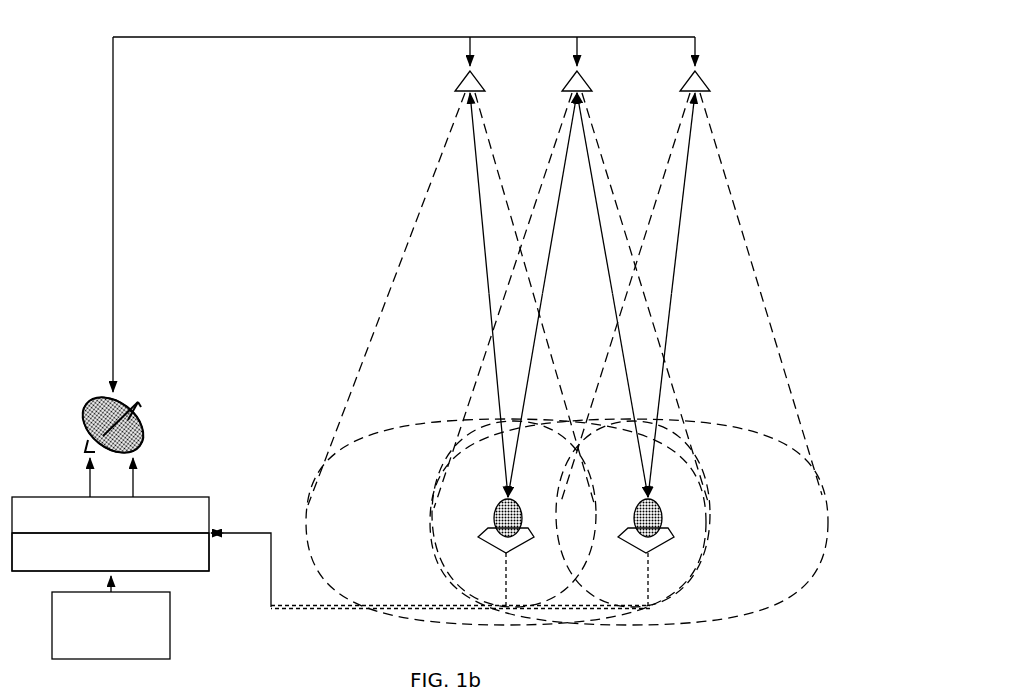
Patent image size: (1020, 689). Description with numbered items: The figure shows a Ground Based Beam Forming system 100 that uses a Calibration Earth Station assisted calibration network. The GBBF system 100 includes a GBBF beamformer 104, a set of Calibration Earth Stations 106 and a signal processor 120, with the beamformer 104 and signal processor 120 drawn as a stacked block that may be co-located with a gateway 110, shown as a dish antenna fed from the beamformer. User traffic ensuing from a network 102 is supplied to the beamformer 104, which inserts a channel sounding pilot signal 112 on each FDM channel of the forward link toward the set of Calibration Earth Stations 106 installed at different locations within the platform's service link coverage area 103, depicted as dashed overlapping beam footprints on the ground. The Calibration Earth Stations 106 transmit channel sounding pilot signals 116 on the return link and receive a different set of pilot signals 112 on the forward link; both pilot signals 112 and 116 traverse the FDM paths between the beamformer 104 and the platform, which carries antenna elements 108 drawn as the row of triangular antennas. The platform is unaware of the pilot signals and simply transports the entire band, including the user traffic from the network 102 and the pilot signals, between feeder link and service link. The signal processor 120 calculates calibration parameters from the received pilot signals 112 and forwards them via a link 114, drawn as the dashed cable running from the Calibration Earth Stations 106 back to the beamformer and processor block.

The GBBF system 100 is at (826, 244).
The network 102 is at (111, 617).
The service link coverage area 103 is at (760, 613).
The GBBF beamformer 104 is at (110, 514).
The Calibration Earth Station 106 is at (517, 545).
The antenna elements 108 is at (460, 92).
The gateway 110 is at (140, 445).
The channel sounding pilot signal 112 is at (113, 237).
The link 114 is at (277, 611).
The channel sounding pilot signals 116 is at (673, 283).
The signal processor 120 is at (110, 552).